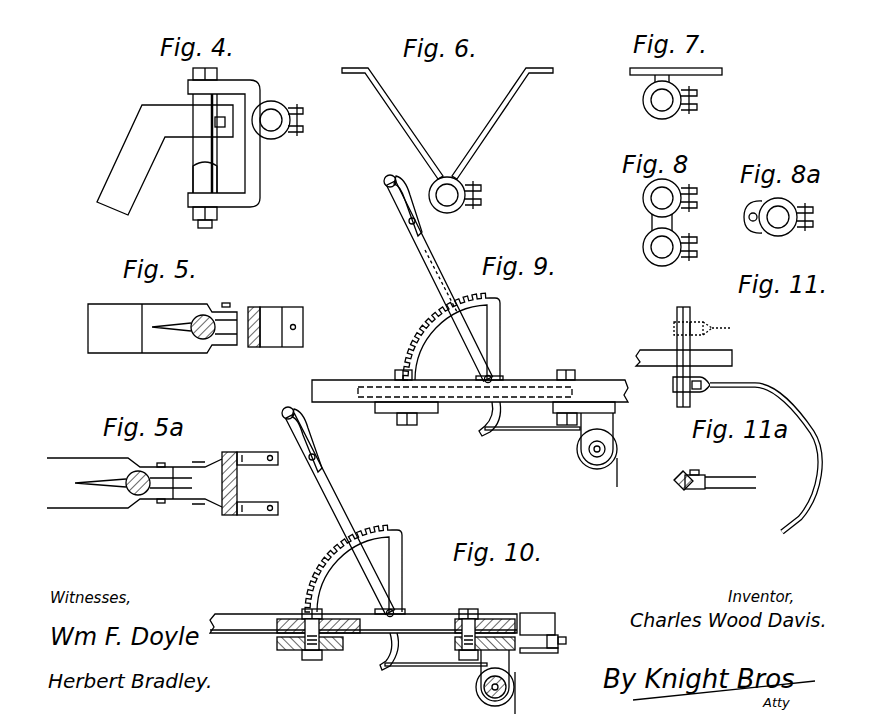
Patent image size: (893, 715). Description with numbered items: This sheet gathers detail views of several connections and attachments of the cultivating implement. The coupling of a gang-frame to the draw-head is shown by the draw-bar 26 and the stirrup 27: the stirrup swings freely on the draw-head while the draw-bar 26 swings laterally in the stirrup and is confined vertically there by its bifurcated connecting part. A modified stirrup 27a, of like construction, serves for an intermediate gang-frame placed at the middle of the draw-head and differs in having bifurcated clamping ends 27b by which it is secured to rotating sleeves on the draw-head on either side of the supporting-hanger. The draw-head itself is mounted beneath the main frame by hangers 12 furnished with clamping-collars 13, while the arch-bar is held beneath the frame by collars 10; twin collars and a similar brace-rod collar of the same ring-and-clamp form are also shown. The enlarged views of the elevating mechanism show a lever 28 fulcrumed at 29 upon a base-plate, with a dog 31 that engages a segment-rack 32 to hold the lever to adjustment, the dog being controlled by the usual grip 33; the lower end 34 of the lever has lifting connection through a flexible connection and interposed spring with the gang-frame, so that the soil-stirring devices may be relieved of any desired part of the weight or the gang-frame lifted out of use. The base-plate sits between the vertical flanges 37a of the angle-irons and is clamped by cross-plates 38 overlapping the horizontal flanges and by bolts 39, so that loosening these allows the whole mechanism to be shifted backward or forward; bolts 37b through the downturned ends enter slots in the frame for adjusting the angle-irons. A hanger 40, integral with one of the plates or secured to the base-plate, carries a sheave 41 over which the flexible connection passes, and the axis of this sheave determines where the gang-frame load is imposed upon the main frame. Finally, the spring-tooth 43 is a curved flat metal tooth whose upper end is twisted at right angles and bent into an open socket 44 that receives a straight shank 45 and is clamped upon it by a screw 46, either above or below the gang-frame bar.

In FIG. 7, the collar 10 is at (644, 104).
In FIG. 6, the hanger 12 is at (447, 123).
In FIG. 6, the clamping-collar 13 is at (485, 188).
In FIG. 4, the draw-bar 26 is at (159, 160).
In FIG. 5, the draw-bar 26 is at (162, 328).
In FIG. 5A, the draw-bar 26 is at (134, 470).
In FIG. 4, the stirrup 27 is at (255, 157).
In FIG. 5, the stirrup 27 is at (262, 313).
In FIG. 5A, the stirrup 27a is at (200, 468).
In FIG. 5A, the bifurcated clamping ends 27b is at (245, 452).
In FIG. 9, the lever 28 is at (423, 258).
In FIG. 10, the lever 28 is at (338, 510).
In FIG. 9, the fulcrum 29 is at (496, 378).
In FIG. 10, the fulcrum 29 is at (400, 611).
In FIG. 9, the dog 31 is at (443, 300).
In FIG. 9, the segment-rack 32 is at (442, 336).
In FIG. 10, the segment-rack 32 is at (342, 568).
In FIG. 9, the grip 33 is at (389, 206).
In FIG. 10, the grip 33 is at (298, 442).
In FIG. 9, the lower end of lever 34 is at (481, 434).
In FIG. 10, the lower end of lever 34 is at (398, 645).
In FIG. 10, the vertical flanges 37a is at (557, 625).
In FIG. 10, the bolts 37b is at (567, 641).
In FIG. 9, the cross-plates 38 is at (430, 413).
In FIG. 10, the cross-plates 38 is at (280, 643).
In FIG. 9, the bolts 39 is at (395, 418).
In FIG. 10, the bolts 39 is at (303, 612).
In FIG. 9, the hanger 40 is at (605, 425).
In FIG. 10, the hanger 40 is at (505, 665).
In FIG. 9, the sheave 41 is at (618, 446).
In FIG. 10, the sheave 41 is at (478, 696).
In FIG. 11, the spring-tooth 43 is at (768, 384).
In FIG. 11A, the spring-tooth 43 is at (755, 489).
In FIG. 11, the open socket 44 is at (673, 385).
In FIG. 11A, the open socket 44 is at (693, 490).
In FIG. 11, the shank 45 is at (685, 306).
In FIG. 11A, the shank 45 is at (680, 487).
In FIG. 11, the screw 46 is at (704, 325).
In FIG. 11A, the screw 46 is at (707, 461).